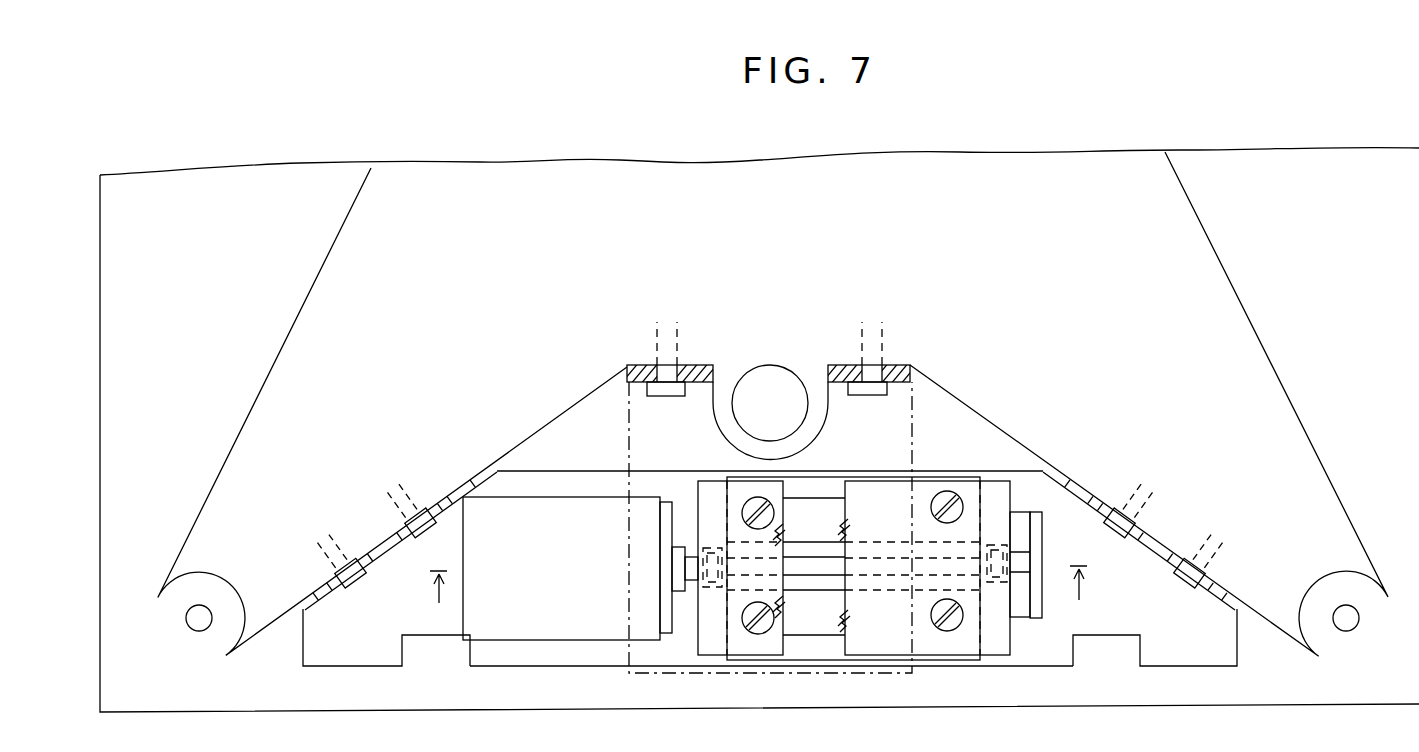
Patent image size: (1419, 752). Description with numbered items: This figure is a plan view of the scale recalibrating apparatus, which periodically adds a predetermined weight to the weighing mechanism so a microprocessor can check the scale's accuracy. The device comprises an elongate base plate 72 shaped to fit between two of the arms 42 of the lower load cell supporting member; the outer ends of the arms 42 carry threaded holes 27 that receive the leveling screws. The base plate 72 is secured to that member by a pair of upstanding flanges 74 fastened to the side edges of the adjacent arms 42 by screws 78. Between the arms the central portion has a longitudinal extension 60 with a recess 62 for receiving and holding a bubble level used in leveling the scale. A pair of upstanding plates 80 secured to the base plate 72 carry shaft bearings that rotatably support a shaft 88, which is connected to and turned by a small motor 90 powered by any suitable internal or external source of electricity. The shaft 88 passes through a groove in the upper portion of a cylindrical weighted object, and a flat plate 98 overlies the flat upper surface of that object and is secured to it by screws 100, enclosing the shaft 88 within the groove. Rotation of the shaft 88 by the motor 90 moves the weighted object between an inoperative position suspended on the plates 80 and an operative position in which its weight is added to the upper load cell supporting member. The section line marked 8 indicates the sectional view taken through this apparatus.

The section line 8- 8 is at (758, 569).
The threaded holes 27 is at (201, 612).
The arms 42 is at (228, 490).
The longitudinal extension 60 is at (829, 418).
The recess 62 is at (792, 378).
The base plate 72 is at (392, 660).
The upstanding flanges 74 is at (378, 550).
The screws 78 is at (416, 547).
The upstanding plates 80 is at (675, 500).
The shaft 88 is at (823, 583).
The motor 90 is at (610, 617).
The flat plate 98 is at (1034, 618).
The screws 100 is at (957, 626).